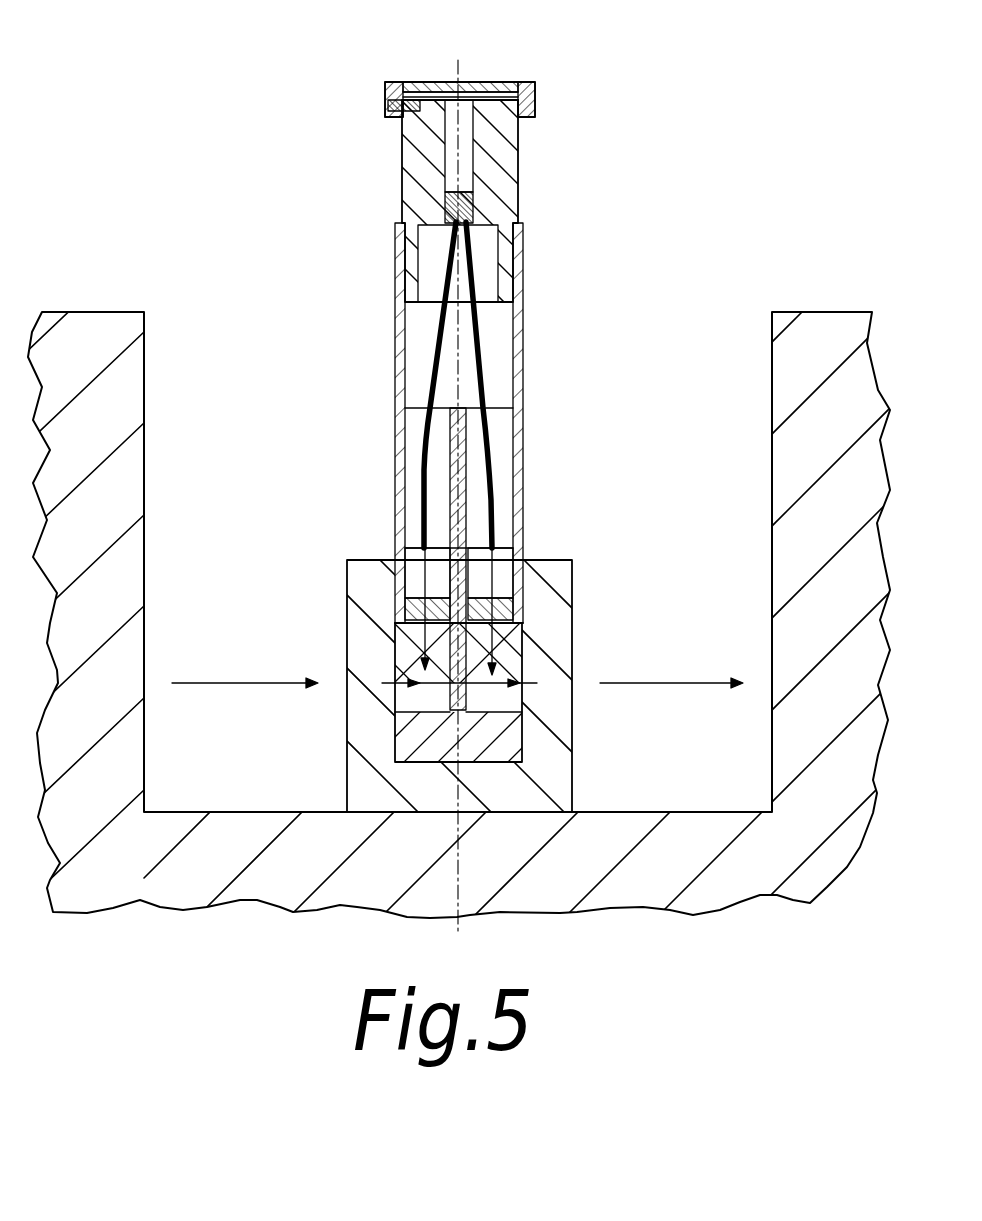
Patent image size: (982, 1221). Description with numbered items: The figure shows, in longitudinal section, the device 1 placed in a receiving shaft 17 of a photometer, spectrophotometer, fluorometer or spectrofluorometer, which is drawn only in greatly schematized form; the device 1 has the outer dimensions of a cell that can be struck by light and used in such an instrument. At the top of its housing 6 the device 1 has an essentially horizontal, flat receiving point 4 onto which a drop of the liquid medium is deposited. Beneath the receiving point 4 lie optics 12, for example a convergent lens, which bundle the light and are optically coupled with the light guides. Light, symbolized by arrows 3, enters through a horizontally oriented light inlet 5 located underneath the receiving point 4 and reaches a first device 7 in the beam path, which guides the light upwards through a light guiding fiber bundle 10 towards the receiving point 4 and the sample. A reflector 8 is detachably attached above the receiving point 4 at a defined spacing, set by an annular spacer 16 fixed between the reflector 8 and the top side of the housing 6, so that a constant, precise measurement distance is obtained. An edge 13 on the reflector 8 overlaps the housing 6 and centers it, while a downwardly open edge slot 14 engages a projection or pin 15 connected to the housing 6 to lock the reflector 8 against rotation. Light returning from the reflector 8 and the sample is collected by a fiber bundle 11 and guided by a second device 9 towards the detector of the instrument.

The device 1 is at (364, 240).
The light 3 is at (250, 682).
The receiving point 4 is at (463, 103).
The light inlet 5 is at (395, 683).
The housing 6 is at (515, 221).
The first device 7 is at (417, 688).
The reflector 8 is at (430, 82).
The second device 9 is at (498, 688).
The light guiding fiber bundle 10 is at (442, 357).
The fiber bundle 11 is at (487, 367).
The optics 12 is at (460, 132).
The edge 13 is at (536, 100).
The edge slot 14 is at (395, 118).
The pin 15 is at (414, 106).
The annular spacer 16 is at (497, 92).
The receiving shaft 17 is at (545, 628).